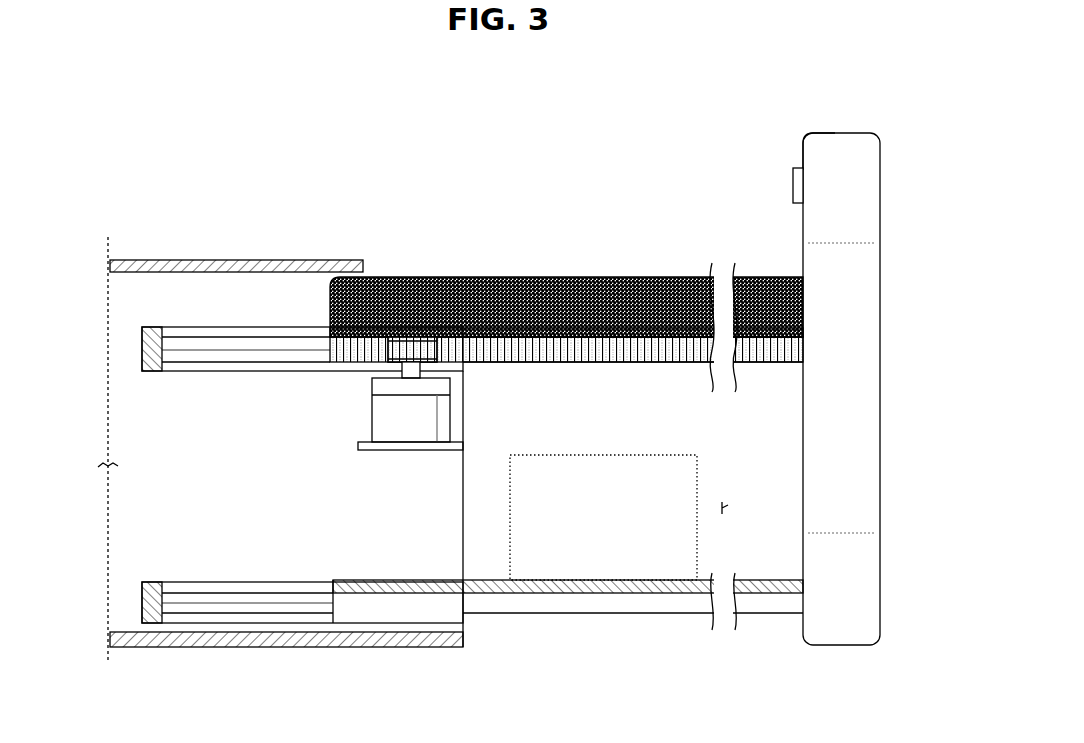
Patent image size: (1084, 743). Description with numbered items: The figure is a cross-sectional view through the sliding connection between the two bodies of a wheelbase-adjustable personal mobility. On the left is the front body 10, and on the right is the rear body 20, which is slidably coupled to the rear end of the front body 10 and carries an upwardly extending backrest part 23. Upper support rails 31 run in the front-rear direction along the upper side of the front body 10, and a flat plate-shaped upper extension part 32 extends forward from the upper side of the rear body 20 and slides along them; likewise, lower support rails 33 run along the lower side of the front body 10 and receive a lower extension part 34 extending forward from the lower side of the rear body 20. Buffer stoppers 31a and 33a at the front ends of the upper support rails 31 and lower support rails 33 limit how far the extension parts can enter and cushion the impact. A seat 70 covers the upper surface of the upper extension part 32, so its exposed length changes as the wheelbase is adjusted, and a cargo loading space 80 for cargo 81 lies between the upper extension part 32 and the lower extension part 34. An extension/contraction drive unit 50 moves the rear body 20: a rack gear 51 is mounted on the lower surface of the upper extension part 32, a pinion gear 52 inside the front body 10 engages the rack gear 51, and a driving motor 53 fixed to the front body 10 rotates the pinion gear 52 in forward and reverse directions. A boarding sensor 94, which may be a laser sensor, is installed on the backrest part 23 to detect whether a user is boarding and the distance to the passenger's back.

The front body 10 is at (148, 254).
The rear body 20 is at (826, 368).
The backrest part 23 is at (803, 150).
The upper support rail 31 is at (251, 287).
The buffer stopper 31a is at (150, 340).
The upper extension part 32 is at (562, 337).
The lower support rail 33 is at (251, 572).
The buffer stopper 33a is at (142, 598).
The lower extension part 34 is at (548, 592).
The extension/contraction drive unit 50 is at (340, 402).
The rack gear 51 is at (515, 365).
The pinion gear 52 is at (410, 345).
The driving motor 53 is at (410, 432).
The seat 70 is at (628, 292).
The cargo loading space 80 is at (722, 508).
The cargo 81 is at (697, 467).
The boarding sensor 94 is at (793, 184).